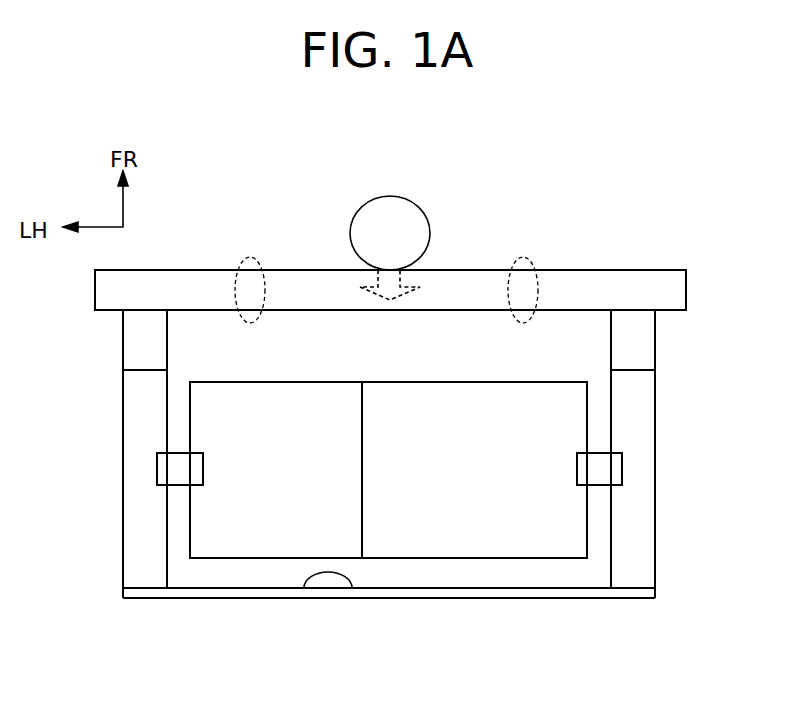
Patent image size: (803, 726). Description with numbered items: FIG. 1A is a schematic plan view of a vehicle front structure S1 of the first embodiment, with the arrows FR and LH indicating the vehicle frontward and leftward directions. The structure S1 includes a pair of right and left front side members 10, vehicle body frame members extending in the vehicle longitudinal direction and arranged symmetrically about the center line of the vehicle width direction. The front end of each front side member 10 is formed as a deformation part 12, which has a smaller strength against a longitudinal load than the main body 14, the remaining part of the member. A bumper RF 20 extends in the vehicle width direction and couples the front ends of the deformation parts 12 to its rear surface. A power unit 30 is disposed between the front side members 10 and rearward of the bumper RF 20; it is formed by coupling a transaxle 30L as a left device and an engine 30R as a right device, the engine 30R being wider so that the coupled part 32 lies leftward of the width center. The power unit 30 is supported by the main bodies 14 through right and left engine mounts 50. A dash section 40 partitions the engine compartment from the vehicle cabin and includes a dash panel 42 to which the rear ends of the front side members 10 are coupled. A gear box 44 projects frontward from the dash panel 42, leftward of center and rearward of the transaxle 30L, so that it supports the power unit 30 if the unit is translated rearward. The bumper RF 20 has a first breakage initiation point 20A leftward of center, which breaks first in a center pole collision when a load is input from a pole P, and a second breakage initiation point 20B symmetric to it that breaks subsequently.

The vehicle front structure S1 is at (701, 222).
The bumper RF 20 is at (596, 268).
The first breakage initiation point 20A is at (250, 258).
The second breakage initiation point 20B is at (530, 258).
The pole P is at (418, 205).
The front side member 10 is at (119, 405).
The deformation part 12 is at (121, 335).
The main body 14 is at (121, 500).
The power unit 30 is at (446, 379).
The transaxle 30L is at (248, 481).
The engine 30R is at (486, 481).
The coupled part 32 is at (365, 447).
The dash section 40 is at (442, 608).
The dash panel 42 is at (537, 600).
The gear box 44 is at (300, 573).
The engine mount 50 is at (156, 469).